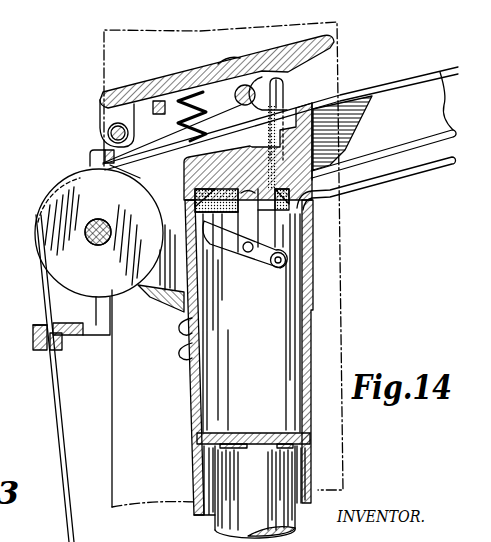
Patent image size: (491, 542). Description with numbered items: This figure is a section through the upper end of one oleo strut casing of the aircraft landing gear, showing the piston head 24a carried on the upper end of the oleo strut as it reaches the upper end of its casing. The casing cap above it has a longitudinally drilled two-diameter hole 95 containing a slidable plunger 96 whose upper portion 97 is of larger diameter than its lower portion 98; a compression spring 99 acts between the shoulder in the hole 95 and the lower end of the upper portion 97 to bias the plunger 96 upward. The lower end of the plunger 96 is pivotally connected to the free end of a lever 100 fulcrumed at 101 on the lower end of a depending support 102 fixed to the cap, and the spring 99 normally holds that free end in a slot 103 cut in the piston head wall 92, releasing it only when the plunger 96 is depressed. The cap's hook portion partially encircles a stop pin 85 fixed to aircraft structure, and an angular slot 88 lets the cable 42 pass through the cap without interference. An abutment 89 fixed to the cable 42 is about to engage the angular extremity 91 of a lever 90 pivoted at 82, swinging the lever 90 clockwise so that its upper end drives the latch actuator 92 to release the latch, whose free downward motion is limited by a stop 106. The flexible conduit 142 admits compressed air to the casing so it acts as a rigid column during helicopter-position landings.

The piston head 24a is at (249, 431).
The cable 42 is at (66, 453).
The pivot 82 is at (97, 246).
The stop pin 85 is at (235, 97).
The angular slot 88 is at (302, 118).
The abutment 89 is at (43, 347).
The lever 90 is at (96, 306).
The angular extremity 91 is at (34, 327).
The latch actuator 92 is at (102, 141).
The two-diameter hole 95 is at (280, 118).
The plunger 96 is at (280, 92).
The upper portion of plunger 97 is at (283, 99).
The lower portion of plunger 98 is at (280, 231).
The compression spring 99 is at (182, 133).
The lever 100 is at (275, 270).
The fulcrum 101 is at (262, 257).
The depending support 102 is at (238, 240).
The slot 103 is at (188, 215).
The stop 106 is at (157, 100).
The flexible conduit 142 is at (425, 166).